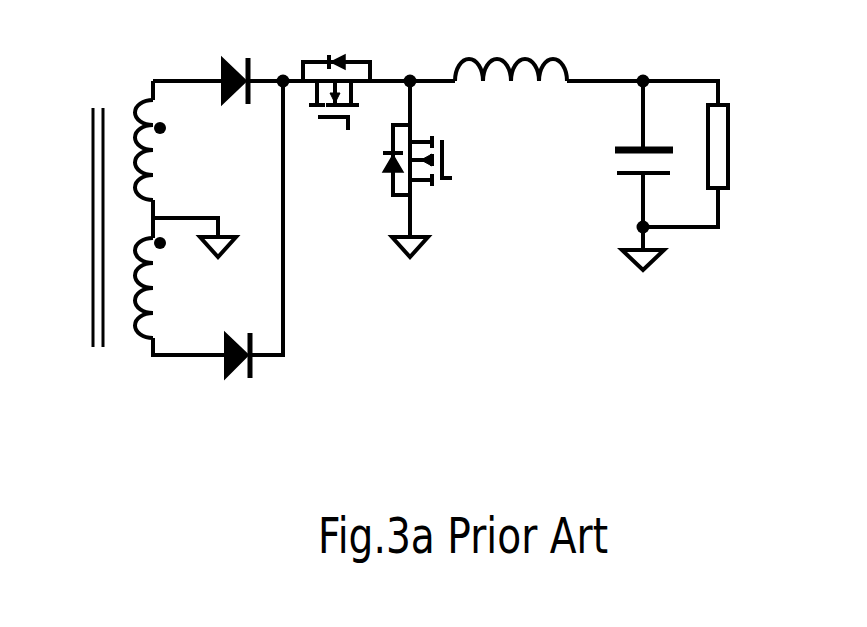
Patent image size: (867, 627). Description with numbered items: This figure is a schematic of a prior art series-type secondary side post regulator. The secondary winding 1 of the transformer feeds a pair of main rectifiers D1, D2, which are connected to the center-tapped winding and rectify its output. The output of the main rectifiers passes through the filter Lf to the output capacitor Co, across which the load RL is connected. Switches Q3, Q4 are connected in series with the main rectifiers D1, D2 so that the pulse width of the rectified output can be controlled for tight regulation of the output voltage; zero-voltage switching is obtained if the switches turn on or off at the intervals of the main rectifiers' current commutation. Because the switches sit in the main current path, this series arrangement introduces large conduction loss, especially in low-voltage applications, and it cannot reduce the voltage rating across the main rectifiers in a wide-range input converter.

The transformer secondary winding 1 is at (159, 219).
The rectifier D1 is at (243, 115).
The rectifier D2 is at (240, 381).
The switch Q3 is at (336, 114).
The switch Q4 is at (433, 169).
The filter Lf is at (511, 98).
The output capacitor Co is at (626, 175).
The load resistor RL is at (749, 168).